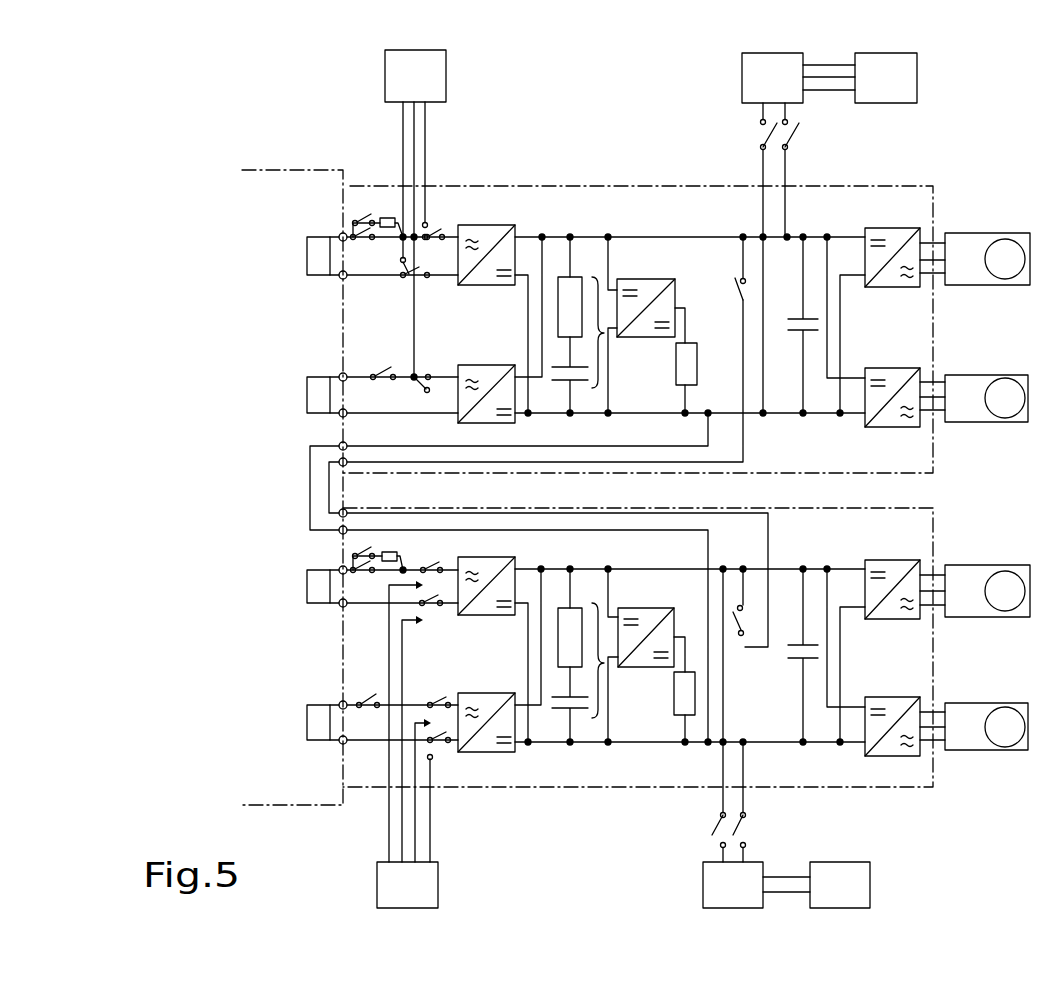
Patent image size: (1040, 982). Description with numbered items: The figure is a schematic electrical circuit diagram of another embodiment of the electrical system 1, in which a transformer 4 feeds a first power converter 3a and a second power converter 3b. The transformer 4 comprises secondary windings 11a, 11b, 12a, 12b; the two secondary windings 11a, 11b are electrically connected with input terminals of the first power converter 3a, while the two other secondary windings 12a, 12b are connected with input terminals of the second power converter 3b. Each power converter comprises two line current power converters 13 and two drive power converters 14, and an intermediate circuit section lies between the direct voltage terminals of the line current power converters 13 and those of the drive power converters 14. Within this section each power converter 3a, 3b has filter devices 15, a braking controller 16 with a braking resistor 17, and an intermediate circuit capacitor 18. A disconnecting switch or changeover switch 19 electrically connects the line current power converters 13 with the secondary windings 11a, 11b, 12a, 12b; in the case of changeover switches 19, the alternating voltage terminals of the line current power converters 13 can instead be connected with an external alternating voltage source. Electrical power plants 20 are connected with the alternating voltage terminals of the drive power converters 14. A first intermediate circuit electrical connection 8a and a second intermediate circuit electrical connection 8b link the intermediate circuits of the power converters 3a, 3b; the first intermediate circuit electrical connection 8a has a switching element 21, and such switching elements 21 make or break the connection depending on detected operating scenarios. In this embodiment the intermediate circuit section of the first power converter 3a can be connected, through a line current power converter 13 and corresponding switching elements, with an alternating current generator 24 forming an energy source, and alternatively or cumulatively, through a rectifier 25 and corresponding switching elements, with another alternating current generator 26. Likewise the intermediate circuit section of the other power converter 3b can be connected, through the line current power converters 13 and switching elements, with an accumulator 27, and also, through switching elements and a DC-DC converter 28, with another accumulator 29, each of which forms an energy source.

The electric drive system 1 is at (656, 174).
The first power converter 3a is at (832, 184).
The second power converter 3b is at (935, 522).
The transformer 4 is at (292, 170).
The first intermediate circuit electrical connection 8a is at (740, 277).
The second intermediate circuit electrical connection 8b is at (668, 446).
The secondary winding 11a is at (307, 252).
The secondary winding 11b is at (307, 395).
The secondary winding 12a is at (307, 589).
The secondary winding 12b is at (307, 725).
The line current power converter 13 is at (478, 223).
The drive power converter 14 is at (890, 227).
The filter device 15 is at (604, 333).
The braking controller 16 is at (676, 279).
The braking resistor 17 is at (697, 377).
The intermediate circuit capacitor 18 is at (793, 335).
The disconnecting switch or changeover switch 19 is at (367, 205).
The electrical power plant 20 is at (987, 233).
The switching element 21 is at (727, 288).
The alternating current generator 24 is at (428, 48).
The rectifier 25 is at (770, 50).
The alternating current generator 26 is at (890, 50).
The accumulator 27 is at (438, 878).
The DC-DC converter 28 is at (703, 880).
The accumulator 29 is at (870, 882).